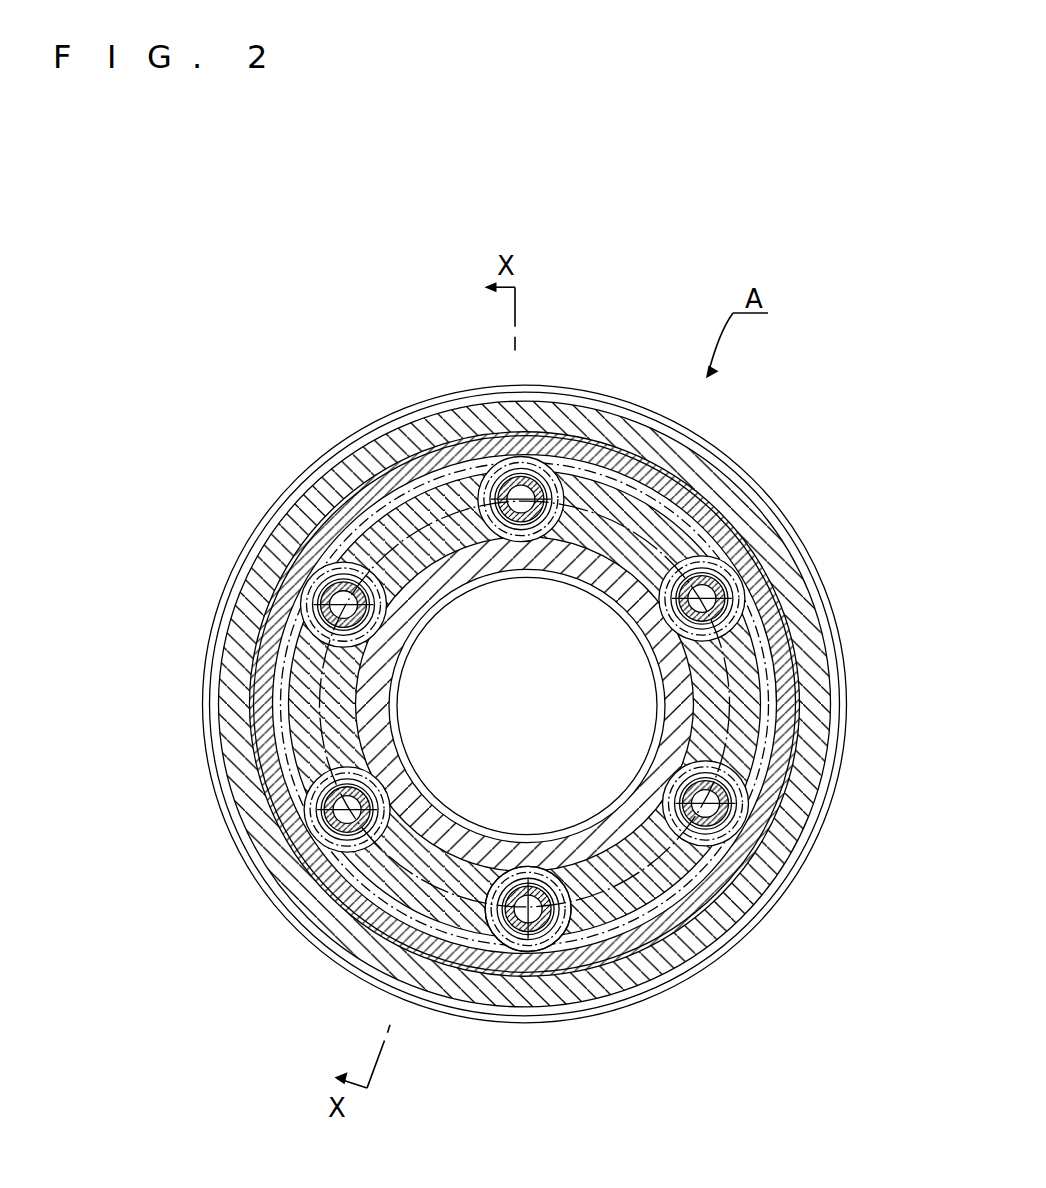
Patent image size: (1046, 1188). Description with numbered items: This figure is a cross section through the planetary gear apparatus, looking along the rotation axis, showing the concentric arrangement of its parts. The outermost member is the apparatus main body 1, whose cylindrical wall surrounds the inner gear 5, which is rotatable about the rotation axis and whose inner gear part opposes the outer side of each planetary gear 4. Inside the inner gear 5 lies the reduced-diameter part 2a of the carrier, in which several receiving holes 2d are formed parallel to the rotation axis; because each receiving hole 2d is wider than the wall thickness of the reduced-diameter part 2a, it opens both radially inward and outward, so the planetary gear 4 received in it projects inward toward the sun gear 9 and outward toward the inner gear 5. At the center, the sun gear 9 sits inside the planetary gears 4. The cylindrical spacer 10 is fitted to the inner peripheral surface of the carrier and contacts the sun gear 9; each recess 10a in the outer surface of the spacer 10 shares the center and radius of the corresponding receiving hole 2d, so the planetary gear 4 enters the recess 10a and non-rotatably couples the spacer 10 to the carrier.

The apparatus main body 1 is at (525, 679).
The reduced-diameter part 2a is at (595, 703).
The receiving hole 2d is at (528, 719).
The planetary gear 4 is at (542, 711).
The inner gear 5 is at (525, 704).
The sun gear 9 is at (484, 770).
The spacer 10 is at (453, 954).
The recess 10a is at (521, 712).